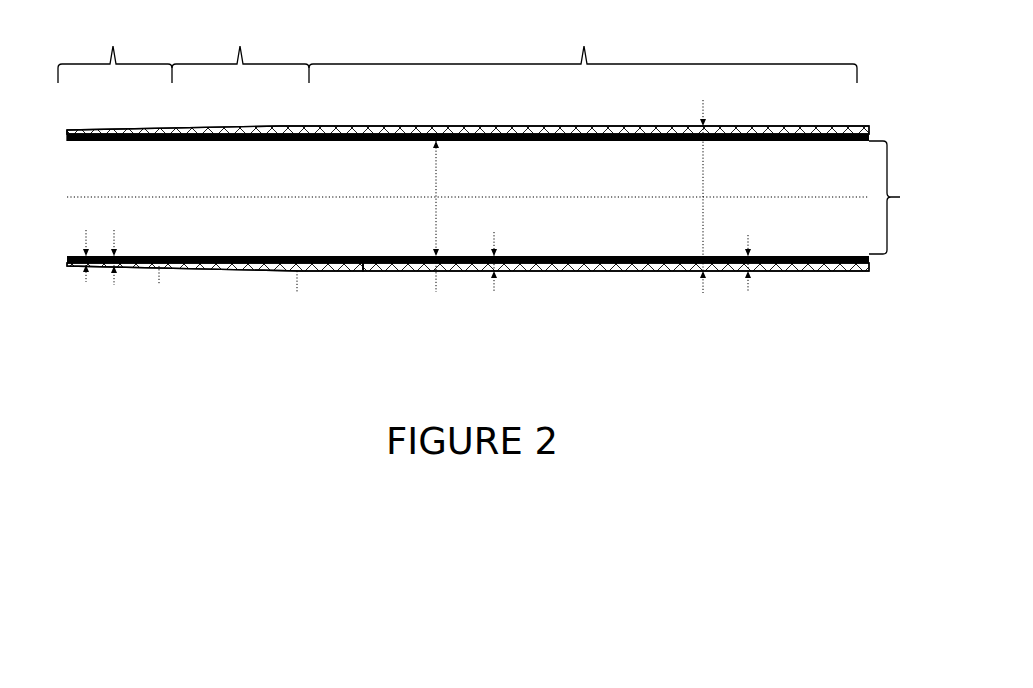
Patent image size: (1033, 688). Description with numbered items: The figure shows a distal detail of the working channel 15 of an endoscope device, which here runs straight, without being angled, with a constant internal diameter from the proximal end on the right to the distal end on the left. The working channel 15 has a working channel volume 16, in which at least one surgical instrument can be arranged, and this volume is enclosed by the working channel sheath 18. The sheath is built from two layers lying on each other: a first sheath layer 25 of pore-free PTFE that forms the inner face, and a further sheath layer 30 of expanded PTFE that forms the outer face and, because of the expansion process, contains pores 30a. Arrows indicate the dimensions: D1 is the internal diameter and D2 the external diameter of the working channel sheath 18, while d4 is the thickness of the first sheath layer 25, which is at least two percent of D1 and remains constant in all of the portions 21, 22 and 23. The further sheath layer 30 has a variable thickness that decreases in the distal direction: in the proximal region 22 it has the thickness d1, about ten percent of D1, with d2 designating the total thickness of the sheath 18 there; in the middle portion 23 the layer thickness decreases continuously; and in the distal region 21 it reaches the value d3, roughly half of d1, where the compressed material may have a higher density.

The working channel 15 is at (503, 190).
The working channel volume 16 is at (256, 188).
The working channel sheath 18 is at (652, 270).
The distal region 21 is at (115, 49).
The proximal region 22 is at (583, 49).
The middle portion 23 is at (240, 49).
The first sheath layer 25 is at (72, 137).
The further sheath layer 30 is at (257, 266).
The pores 30a is at (363, 267).
The internal diameter D1 is at (417, 216).
The external diameter D2 is at (686, 196).
The thickness of the further sheath layer in the proximal region d1 is at (755, 277).
The thickness of the sheath in the proximal region d2 is at (502, 276).
The thickness of the further sheath layer in the distal region d3 is at (114, 277).
The thickness of the first sheath layer d4 is at (80, 271).